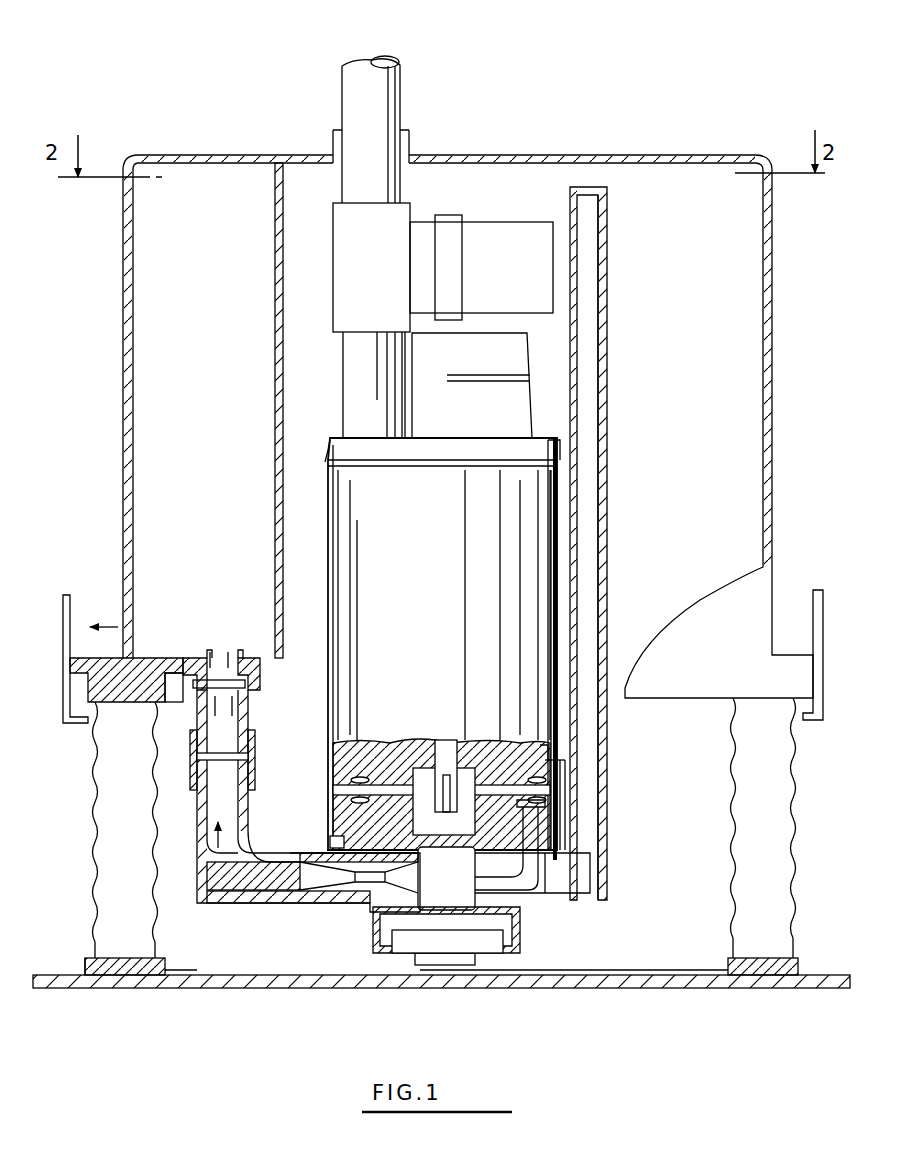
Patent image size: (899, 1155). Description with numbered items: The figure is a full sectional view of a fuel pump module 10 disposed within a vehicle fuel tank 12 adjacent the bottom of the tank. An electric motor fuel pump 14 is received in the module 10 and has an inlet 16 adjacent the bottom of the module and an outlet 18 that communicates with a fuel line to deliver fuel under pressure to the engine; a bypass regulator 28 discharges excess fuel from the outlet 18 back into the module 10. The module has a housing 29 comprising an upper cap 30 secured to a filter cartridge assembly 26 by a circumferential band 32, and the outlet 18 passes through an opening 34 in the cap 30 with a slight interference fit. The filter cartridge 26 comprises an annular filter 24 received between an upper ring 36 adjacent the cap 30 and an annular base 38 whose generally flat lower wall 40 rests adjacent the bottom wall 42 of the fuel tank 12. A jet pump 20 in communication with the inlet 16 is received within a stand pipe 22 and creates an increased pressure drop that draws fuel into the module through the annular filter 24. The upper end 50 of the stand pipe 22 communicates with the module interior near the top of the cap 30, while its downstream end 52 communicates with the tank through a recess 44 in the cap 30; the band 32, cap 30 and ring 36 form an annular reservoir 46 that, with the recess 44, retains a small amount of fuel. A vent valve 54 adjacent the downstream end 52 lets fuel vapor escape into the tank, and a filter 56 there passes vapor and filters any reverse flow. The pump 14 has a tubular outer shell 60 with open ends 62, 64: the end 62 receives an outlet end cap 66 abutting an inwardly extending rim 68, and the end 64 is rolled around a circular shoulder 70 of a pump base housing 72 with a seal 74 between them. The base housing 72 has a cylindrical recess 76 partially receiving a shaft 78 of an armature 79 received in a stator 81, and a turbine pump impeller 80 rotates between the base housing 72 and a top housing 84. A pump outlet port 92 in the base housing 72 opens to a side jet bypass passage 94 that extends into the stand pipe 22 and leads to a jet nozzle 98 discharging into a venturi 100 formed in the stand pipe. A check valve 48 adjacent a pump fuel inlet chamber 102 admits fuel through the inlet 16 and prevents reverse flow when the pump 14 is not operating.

The fuel pump module 10 is at (688, 44).
The fuel tank 12 is at (56, 973).
The electric motor fuel pump 14 is at (330, 440).
The inlet 16 is at (522, 942).
The outlet 18 is at (356, 358).
The jet pump 20 is at (555, 868).
The stand pipe 22 is at (605, 541).
The annular filter 24 is at (780, 778).
The filter cartridge assembly 26 is at (123, 724).
The bypass regulator 28 is at (492, 238).
The housing 29 is at (118, 560).
The upper cap 30 is at (710, 156).
The circumferential band 32 is at (63, 652).
The opening 34 is at (400, 140).
The upper ring 36 is at (148, 657).
The annular base 38 is at (142, 975).
The lower wall 40 is at (196, 974).
The bottom wall 42 is at (76, 982).
The recess 44 is at (142, 393).
The annular reservoir 46 is at (90, 585).
The check valve 48 is at (410, 941).
The upper end 50 is at (588, 185).
The downstream end 52 is at (262, 672).
The vent valve 54 is at (250, 690).
The filter 56 is at (222, 752).
The tubular outer shell 60 is at (550, 492).
The open end 62 is at (553, 438).
The open end 64 is at (598, 841).
The outlet end cap 66 is at (540, 388).
The inwardly extending rim 68 is at (558, 452).
The circular shoulder 70 is at (598, 812).
The pump base housing 72 is at (345, 810).
The seal 74 is at (332, 840).
The cylindrical recess 76 is at (468, 812).
The shaft 78 is at (425, 745).
The armature 79 is at (600, 763).
The turbine pump impeller 80 is at (350, 766).
The stator 81 is at (598, 743).
The top housing 84 is at (468, 745).
The pump outlet port 92 is at (598, 796).
The side jet bypass passage 94 is at (540, 880).
The jet nozzle 98 is at (475, 882).
The venturi 100 is at (355, 880).
The pump fuel inlet chamber 102 is at (480, 953).